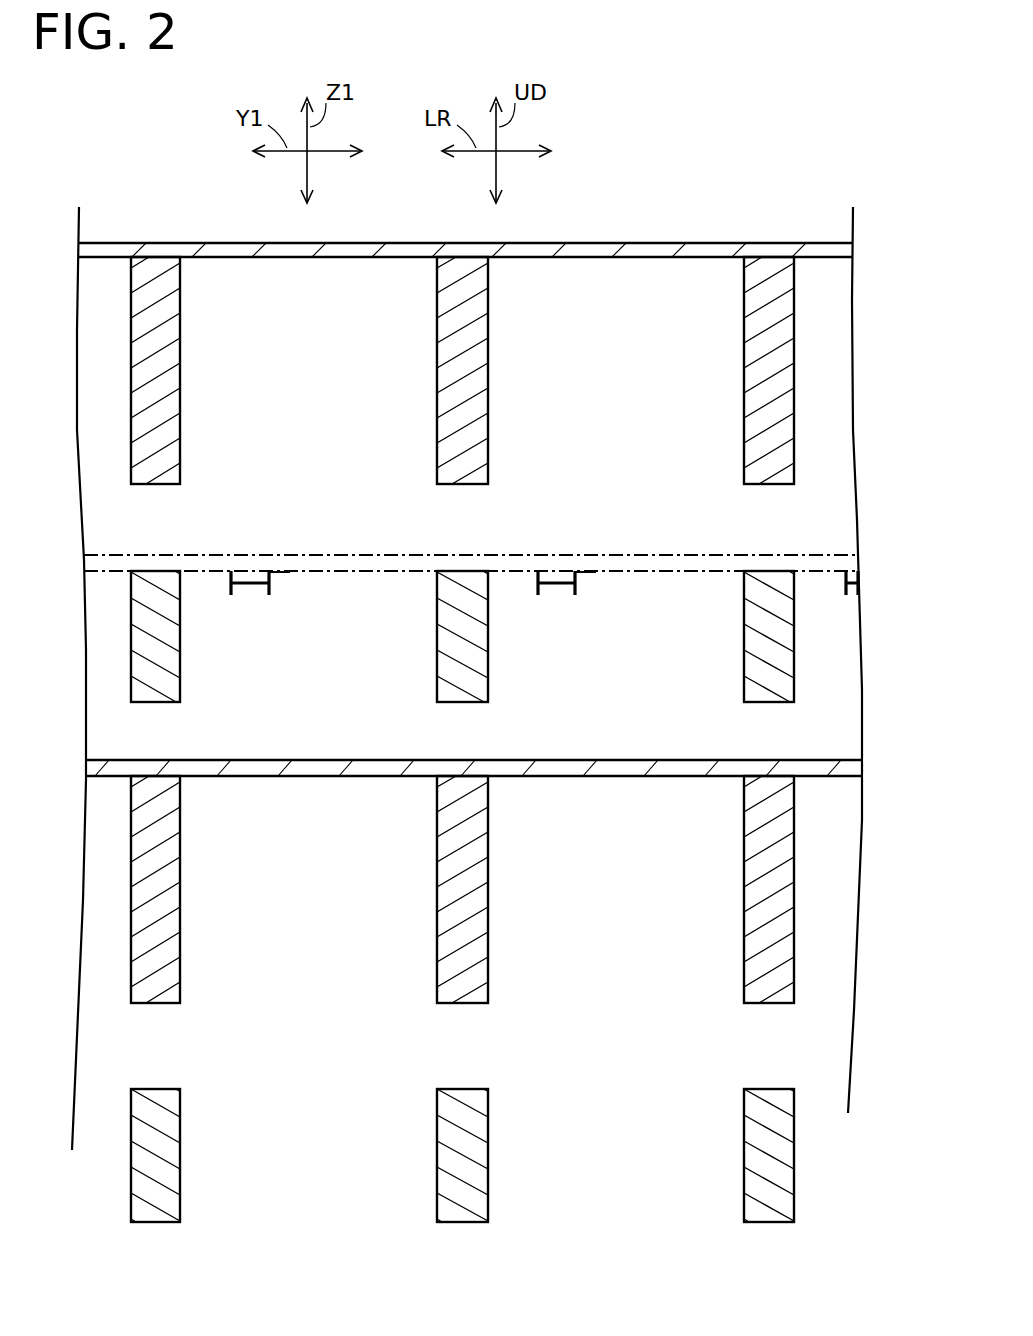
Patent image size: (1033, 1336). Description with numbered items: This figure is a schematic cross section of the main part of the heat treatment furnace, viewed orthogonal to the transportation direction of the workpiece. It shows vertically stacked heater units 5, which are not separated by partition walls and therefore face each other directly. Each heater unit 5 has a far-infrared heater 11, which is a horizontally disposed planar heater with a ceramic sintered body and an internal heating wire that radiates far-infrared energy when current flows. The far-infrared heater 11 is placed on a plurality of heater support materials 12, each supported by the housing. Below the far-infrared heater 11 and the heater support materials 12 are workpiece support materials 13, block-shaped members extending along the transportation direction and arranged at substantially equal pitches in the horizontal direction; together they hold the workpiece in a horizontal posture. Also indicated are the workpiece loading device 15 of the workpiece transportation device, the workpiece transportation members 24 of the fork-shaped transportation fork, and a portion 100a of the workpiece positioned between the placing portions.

The heater unit 5 is at (873, 230).
The far-infrared heater 11 is at (642, 242).
The heater support material 12 is at (165, 407).
The workpiece support material 13 is at (183, 675).
The workpiece loading device 15 is at (230, 578).
The workpiece transportation member 24 is at (571, 597).
The portion of the workpiece 100a is at (580, 582).